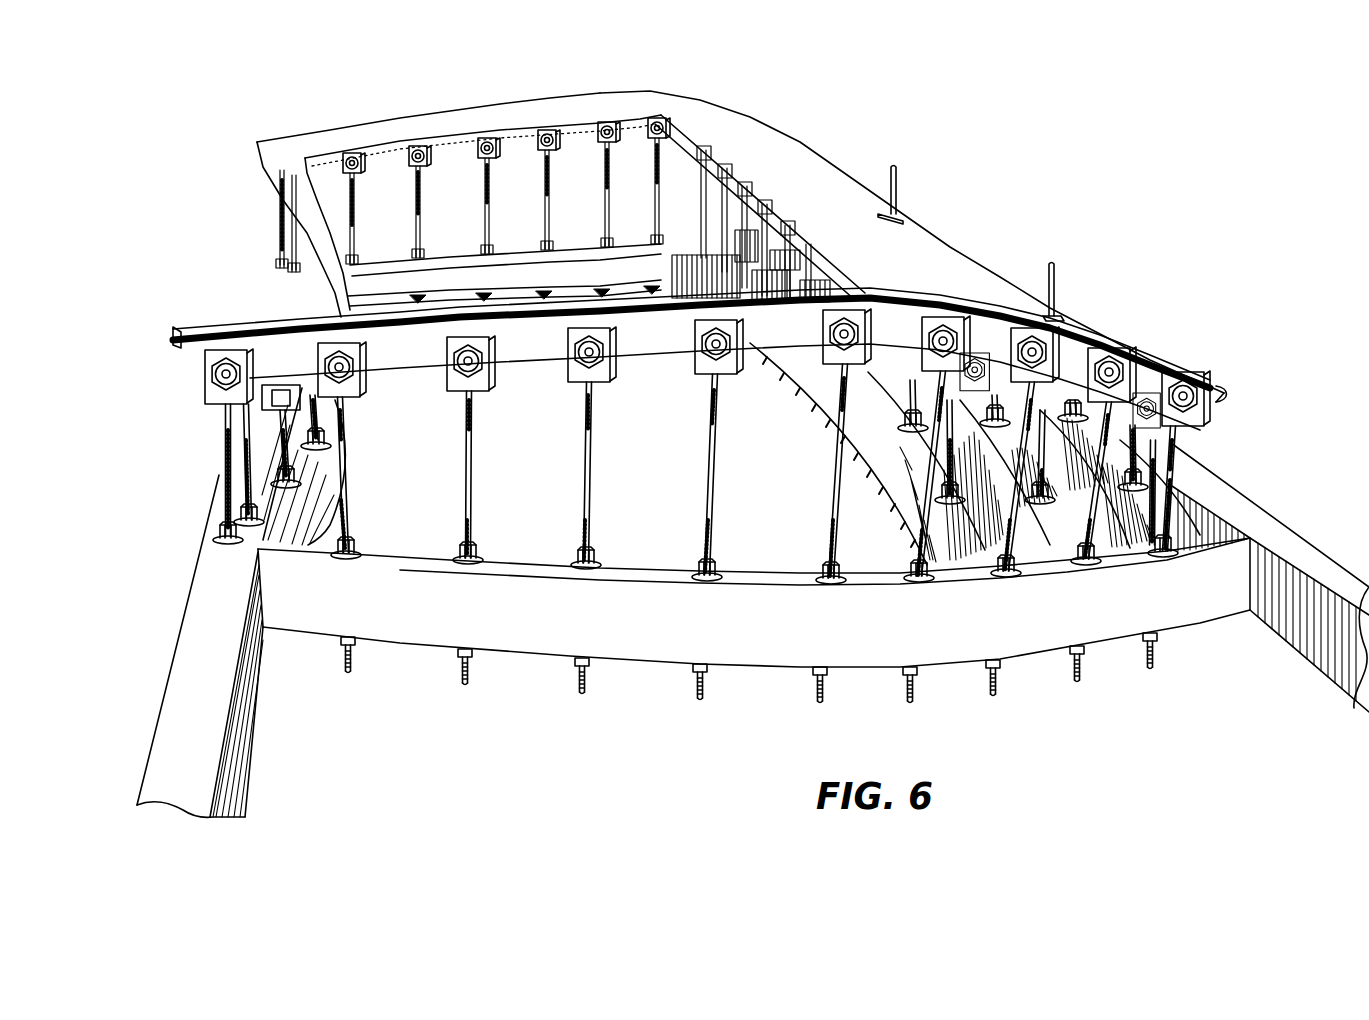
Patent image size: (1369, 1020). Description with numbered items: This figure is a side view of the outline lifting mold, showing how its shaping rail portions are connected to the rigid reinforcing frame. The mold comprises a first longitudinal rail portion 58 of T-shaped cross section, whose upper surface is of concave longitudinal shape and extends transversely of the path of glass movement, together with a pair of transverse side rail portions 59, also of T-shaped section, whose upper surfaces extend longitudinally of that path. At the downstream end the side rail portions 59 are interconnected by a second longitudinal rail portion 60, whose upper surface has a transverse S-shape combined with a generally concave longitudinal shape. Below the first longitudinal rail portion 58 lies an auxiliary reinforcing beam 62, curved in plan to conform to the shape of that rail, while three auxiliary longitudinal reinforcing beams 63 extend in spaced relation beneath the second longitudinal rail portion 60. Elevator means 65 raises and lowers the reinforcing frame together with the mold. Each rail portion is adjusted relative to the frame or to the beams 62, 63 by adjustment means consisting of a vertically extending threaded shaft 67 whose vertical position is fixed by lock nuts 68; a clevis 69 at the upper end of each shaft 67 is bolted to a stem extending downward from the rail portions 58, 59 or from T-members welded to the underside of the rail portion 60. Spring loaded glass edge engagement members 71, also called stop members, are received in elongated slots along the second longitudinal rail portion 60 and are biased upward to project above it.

The first longitudinal rail portion 58 is at (323, 305).
The transverse side rail portions 59 is at (569, 104).
The second longitudinal rail portion 60 is at (797, 168).
The auxiliary reinforcing beam 62 is at (338, 508).
The auxiliary longitudinal reinforcing beams 63 is at (888, 447).
The elevator means 65 is at (452, 452).
The vertically extending threaded shaft 67 is at (545, 207).
The lock nuts 68 is at (570, 560).
The clevis 69 is at (478, 150).
The spring loaded glass edge engagement members 71 is at (898, 194).